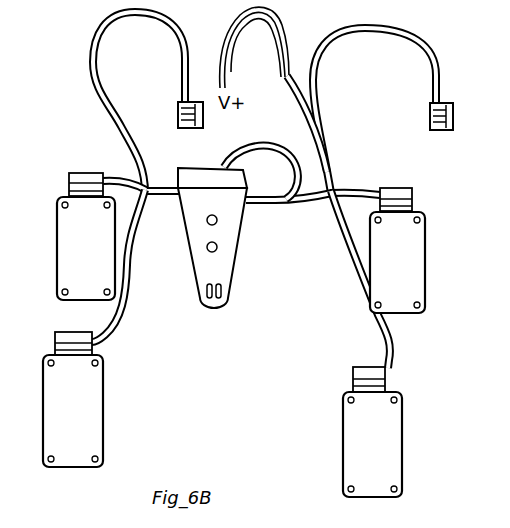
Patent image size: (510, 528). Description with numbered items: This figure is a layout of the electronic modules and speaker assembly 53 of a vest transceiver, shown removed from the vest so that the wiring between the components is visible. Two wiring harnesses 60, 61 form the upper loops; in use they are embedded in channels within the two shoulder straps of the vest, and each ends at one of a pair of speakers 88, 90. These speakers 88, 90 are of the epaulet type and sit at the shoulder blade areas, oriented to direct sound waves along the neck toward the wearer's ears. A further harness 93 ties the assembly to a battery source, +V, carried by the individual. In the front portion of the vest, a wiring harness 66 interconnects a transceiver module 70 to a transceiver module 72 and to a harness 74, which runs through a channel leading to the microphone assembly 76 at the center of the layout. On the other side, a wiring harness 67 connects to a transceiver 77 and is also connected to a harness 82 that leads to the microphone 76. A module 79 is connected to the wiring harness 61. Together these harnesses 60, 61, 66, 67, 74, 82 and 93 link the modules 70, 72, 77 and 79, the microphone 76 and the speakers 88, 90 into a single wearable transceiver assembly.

The wiring harness 60 is at (93, 65).
The wiring harness 61 is at (315, 68).
The electronic modules and speaker assembly 53 is at (291, 124).
The harness 93 is at (222, 88).
The speaker 88 is at (179, 118).
The speaker 90 is at (430, 123).
The harness 74 is at (165, 197).
The wiring harness 66 is at (122, 327).
The wiring harness 67 is at (351, 276).
The harness 82 is at (306, 203).
The microphone assembly 76 is at (227, 274).
The transceiver module 72 is at (97, 249).
The transceiver module 70 is at (87, 418).
The module 79 is at (407, 268).
The transceiver 77 is at (383, 454).